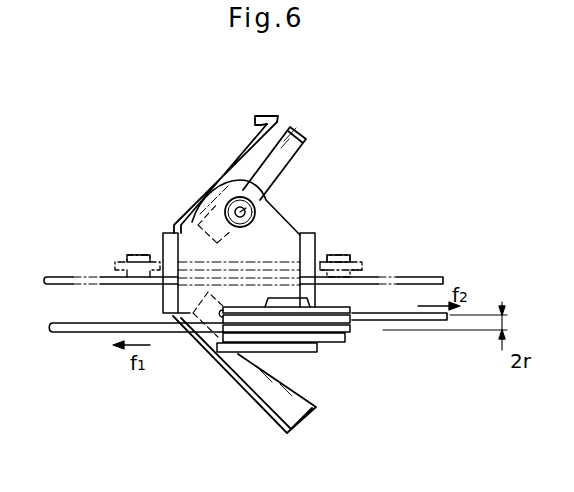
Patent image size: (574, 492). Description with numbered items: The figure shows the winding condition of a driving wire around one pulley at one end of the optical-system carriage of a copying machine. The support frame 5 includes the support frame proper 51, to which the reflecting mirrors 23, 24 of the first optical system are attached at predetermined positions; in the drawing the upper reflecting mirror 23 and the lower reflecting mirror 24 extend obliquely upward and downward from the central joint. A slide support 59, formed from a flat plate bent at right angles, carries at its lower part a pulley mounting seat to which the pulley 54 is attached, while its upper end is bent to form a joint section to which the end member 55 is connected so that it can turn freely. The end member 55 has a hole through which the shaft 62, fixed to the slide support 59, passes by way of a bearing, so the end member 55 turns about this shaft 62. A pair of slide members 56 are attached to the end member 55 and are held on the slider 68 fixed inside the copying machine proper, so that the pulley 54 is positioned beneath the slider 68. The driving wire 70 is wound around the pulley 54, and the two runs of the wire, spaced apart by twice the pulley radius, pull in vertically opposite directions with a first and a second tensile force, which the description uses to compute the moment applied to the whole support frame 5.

The support frame 5 is at (217, 168).
The support frame proper 51 is at (259, 108).
The reflecting mirror 23 is at (306, 136).
The shaft 62 is at (250, 210).
The slide support 59 is at (279, 230).
The slide member 56 is at (137, 256).
The end member 55 is at (366, 259).
The slider 68 is at (425, 280).
The driving wire 70 is at (410, 322).
The pulley 54 is at (340, 342).
The reflecting mirror 24 is at (277, 385).